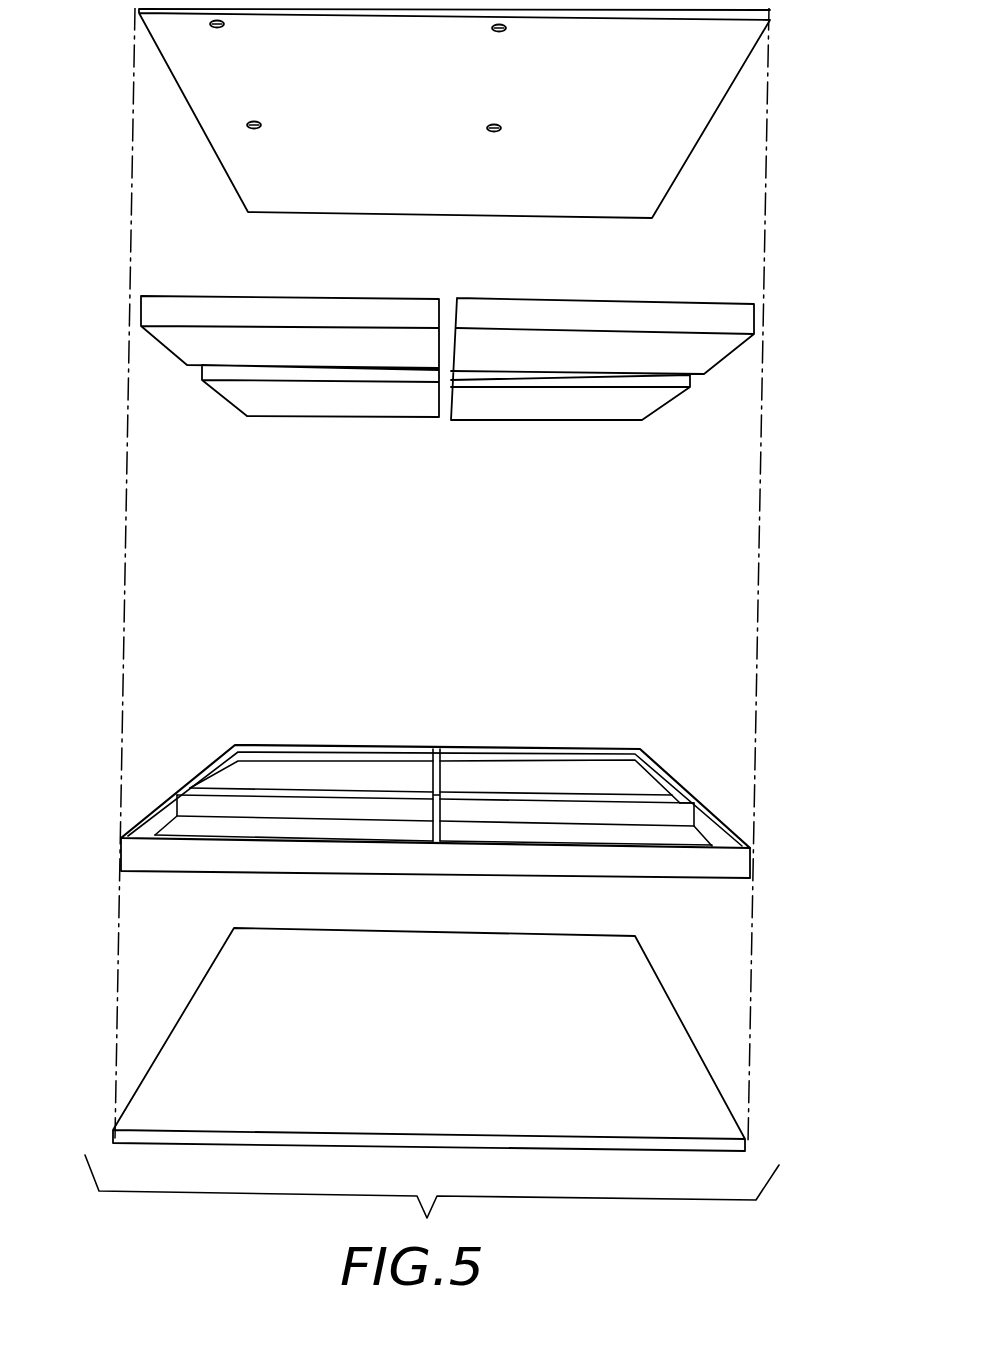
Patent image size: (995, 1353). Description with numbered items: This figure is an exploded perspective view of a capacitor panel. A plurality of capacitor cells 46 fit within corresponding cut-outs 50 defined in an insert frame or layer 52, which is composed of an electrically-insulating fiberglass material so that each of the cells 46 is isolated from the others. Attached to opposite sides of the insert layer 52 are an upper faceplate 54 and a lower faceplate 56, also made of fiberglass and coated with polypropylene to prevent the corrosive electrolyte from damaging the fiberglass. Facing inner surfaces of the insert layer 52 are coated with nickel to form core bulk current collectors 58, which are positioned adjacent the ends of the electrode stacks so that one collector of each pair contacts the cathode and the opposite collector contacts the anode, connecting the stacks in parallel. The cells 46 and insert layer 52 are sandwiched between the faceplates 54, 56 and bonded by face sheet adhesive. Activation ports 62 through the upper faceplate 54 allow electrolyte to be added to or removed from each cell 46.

The cells 46 is at (268, 338).
The cut-outs 50 is at (523, 773).
The insert frame or layer 52 is at (268, 742).
The upper faceplate 54 is at (693, 148).
The lower faceplate 56 is at (668, 1000).
The core bulk current collectors 58 is at (210, 773).
The activation port 62 is at (504, 24).